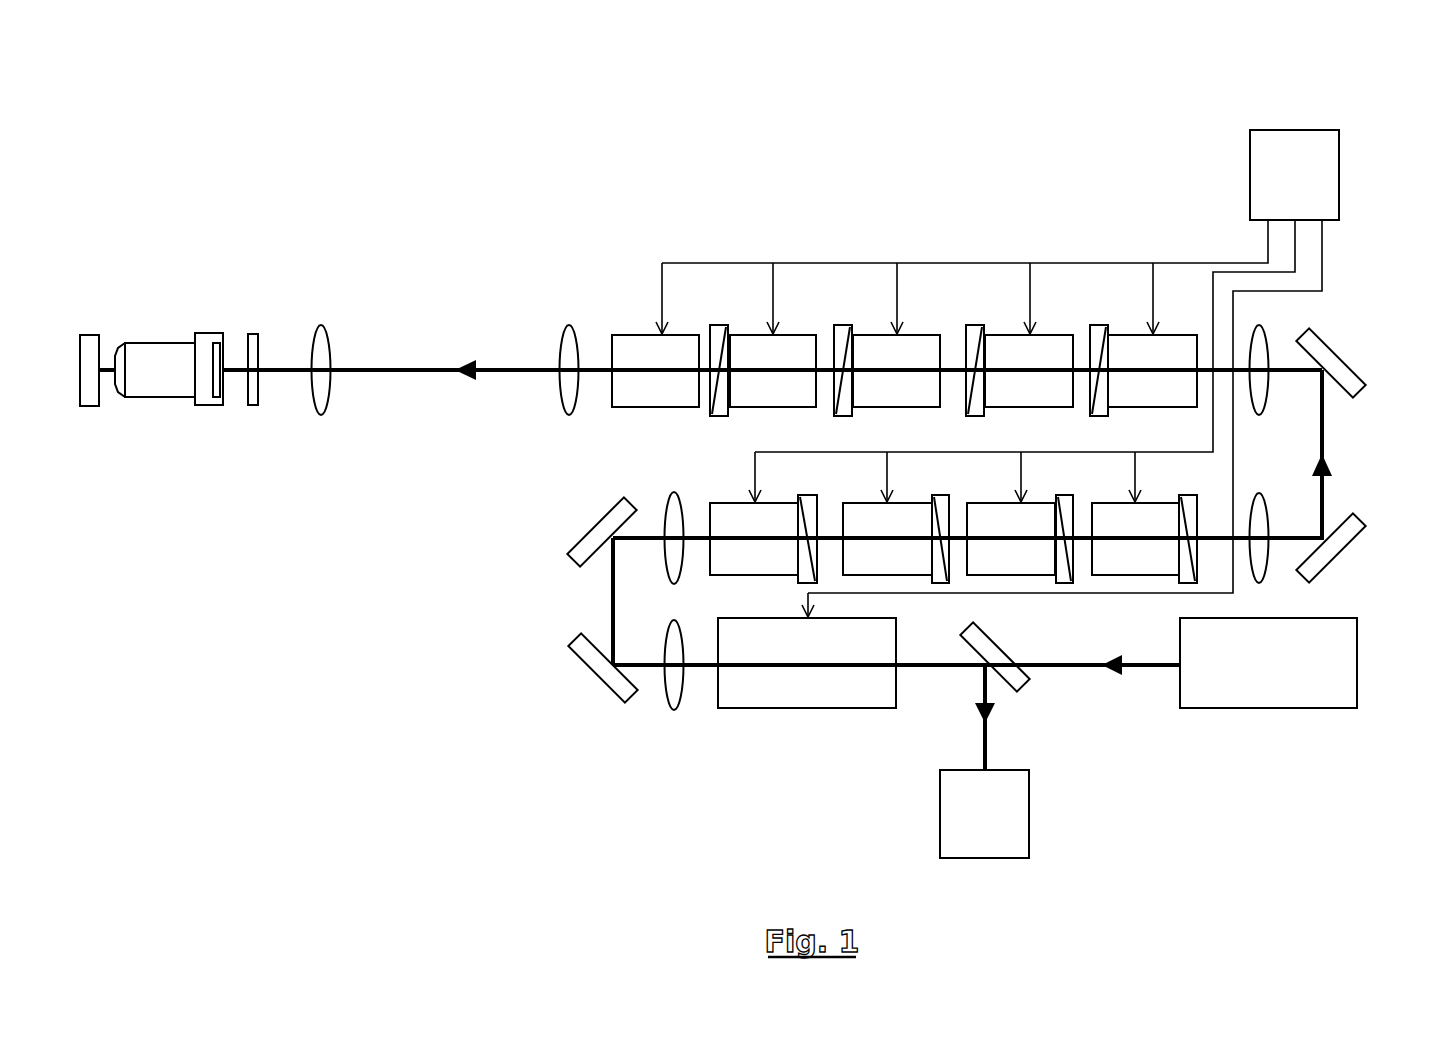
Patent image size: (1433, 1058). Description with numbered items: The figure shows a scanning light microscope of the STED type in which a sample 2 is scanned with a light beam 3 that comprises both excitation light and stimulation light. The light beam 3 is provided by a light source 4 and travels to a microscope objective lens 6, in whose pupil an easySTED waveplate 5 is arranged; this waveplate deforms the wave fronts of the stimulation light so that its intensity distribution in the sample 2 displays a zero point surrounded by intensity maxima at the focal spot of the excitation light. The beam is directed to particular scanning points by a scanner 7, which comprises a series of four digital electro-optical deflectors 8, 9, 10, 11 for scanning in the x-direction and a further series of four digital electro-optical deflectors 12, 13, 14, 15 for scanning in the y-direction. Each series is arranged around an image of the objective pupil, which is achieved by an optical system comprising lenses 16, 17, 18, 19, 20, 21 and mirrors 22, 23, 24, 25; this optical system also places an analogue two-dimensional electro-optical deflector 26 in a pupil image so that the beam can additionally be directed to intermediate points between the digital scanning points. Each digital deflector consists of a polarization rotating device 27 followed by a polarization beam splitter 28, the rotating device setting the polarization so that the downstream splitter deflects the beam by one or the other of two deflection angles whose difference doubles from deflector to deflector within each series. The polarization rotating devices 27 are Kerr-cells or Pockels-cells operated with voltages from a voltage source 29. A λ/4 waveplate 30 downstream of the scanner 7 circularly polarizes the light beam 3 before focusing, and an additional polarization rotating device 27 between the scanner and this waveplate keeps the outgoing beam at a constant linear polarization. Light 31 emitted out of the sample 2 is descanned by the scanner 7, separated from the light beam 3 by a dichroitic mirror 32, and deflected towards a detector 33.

The sample 2 is at (90, 333).
The light beam 3 is at (1140, 668).
The light source 4 is at (1272, 710).
The easySTED waveplate 5 is at (212, 331).
The microscope objective lens 6 is at (159, 338).
The scanner 7 is at (882, 170).
The digital electro-optical deflector 8 is at (719, 485).
The digital electro-optical deflector 9 is at (863, 496).
The digital electro-optical deflector 10 is at (995, 496).
The digital electro-optical deflector 11 is at (1113, 496).
The digital electro-optical deflector 12 is at (1137, 319).
The digital electro-optical deflector 13 is at (1007, 319).
The digital electro-optical deflector 14 is at (882, 319).
The digital electro-optical deflector 15 is at (755, 319).
The lens 16 is at (320, 324).
The lens 17 is at (569, 323).
The lens 18 is at (1268, 333).
The lens 19 is at (1268, 570).
The lens 20 is at (672, 492).
The lens 21 is at (674, 708).
The mirror 22 is at (1343, 358).
The mirror 23 is at (1345, 553).
The mirror 24 is at (597, 530).
The mirror 25 is at (593, 672).
The analogue two-dimensional electro-optical deflector 26 is at (775, 711).
The polarization rotating device 27 is at (630, 333).
The polarization beam splitter 28 is at (722, 323).
The voltage source 29 is at (1292, 128).
The λ/4 waveplate 30 is at (251, 408).
The light emitted out of the sample 31 is at (983, 742).
The dichroitic mirror 32 is at (1018, 685).
The detector 33 is at (1030, 813).